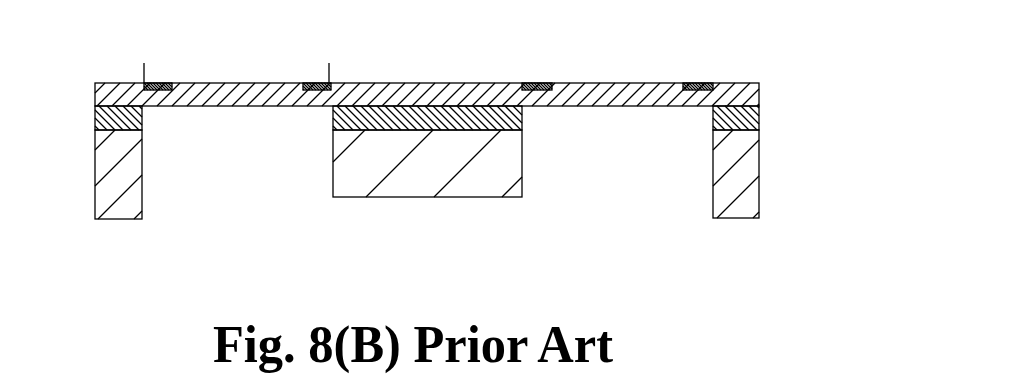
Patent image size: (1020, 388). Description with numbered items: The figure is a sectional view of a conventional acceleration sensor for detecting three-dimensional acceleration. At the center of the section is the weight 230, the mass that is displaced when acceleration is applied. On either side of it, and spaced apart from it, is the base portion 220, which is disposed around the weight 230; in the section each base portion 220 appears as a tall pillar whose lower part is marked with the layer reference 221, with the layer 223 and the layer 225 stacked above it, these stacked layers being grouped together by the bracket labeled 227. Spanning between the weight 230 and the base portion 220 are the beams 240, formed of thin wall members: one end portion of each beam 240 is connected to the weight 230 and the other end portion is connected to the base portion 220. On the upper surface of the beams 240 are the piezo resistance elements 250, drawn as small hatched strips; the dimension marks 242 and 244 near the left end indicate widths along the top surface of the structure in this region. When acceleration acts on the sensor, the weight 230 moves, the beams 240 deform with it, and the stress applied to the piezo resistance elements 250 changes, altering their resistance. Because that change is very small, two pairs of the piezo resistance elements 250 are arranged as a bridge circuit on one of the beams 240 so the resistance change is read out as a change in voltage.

The base portion 220 is at (142, 226).
The base layer 221 is at (746, 172).
The intermediate layer 223 is at (746, 118).
The upper layer 225 is at (748, 94).
The laminated substrate 227 is at (821, 97).
The weight 230 is at (522, 226).
The beam 240 is at (222, 106).
The gap region 242 is at (166, 73).
The electrode strip 244 is at (148, 67).
The piezo resistance element 250 is at (694, 83).